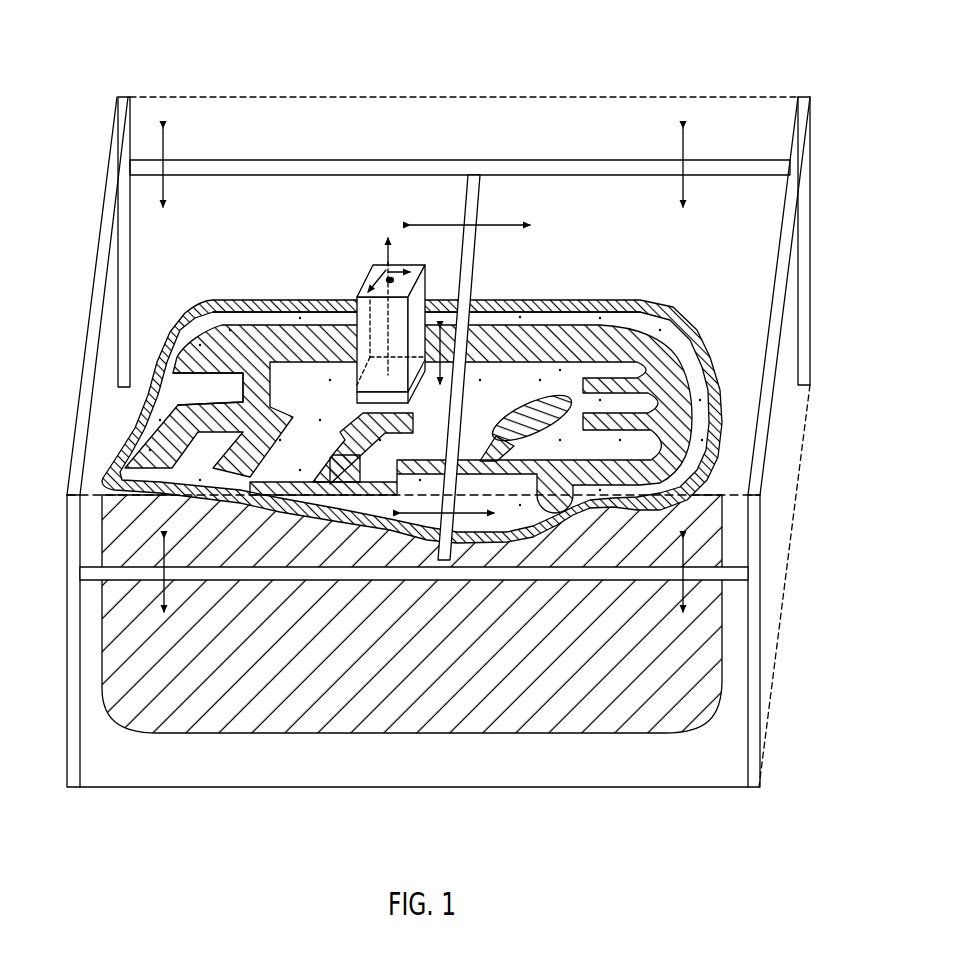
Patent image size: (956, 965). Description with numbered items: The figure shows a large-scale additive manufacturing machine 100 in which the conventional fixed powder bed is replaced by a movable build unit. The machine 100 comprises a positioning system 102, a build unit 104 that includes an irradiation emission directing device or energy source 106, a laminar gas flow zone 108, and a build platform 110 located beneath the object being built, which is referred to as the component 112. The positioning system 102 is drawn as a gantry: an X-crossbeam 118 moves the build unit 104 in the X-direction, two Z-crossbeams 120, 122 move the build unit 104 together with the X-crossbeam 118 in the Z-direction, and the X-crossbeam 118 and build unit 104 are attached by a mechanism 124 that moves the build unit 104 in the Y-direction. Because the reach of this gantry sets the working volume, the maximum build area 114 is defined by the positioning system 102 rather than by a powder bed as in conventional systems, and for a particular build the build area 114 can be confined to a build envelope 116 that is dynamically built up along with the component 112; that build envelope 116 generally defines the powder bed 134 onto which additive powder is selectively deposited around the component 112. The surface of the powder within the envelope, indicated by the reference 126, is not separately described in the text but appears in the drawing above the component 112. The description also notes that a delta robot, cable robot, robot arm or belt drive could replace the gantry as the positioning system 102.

The large-scale additive manufacturing machine 100 is at (492, 80).
The positioning system 102 is at (123, 96).
The build unit 104 is at (380, 262).
The irradiation emission directing device or energy source 106 is at (393, 279).
The laminar gas flow zone 108 is at (380, 398).
The build platform 110 is at (610, 772).
The component 112 is at (700, 393).
The maximum build area 114 is at (793, 530).
The build envelope 116 is at (675, 312).
The X-crossbeam 118 is at (478, 256).
The Z-crossbeam 120 is at (252, 160).
The Z-crossbeam 122 is at (240, 582).
The mechanism 124 is at (430, 357).
The powder bed surface 126 is at (308, 318).
The powder bed 134 is at (190, 378).